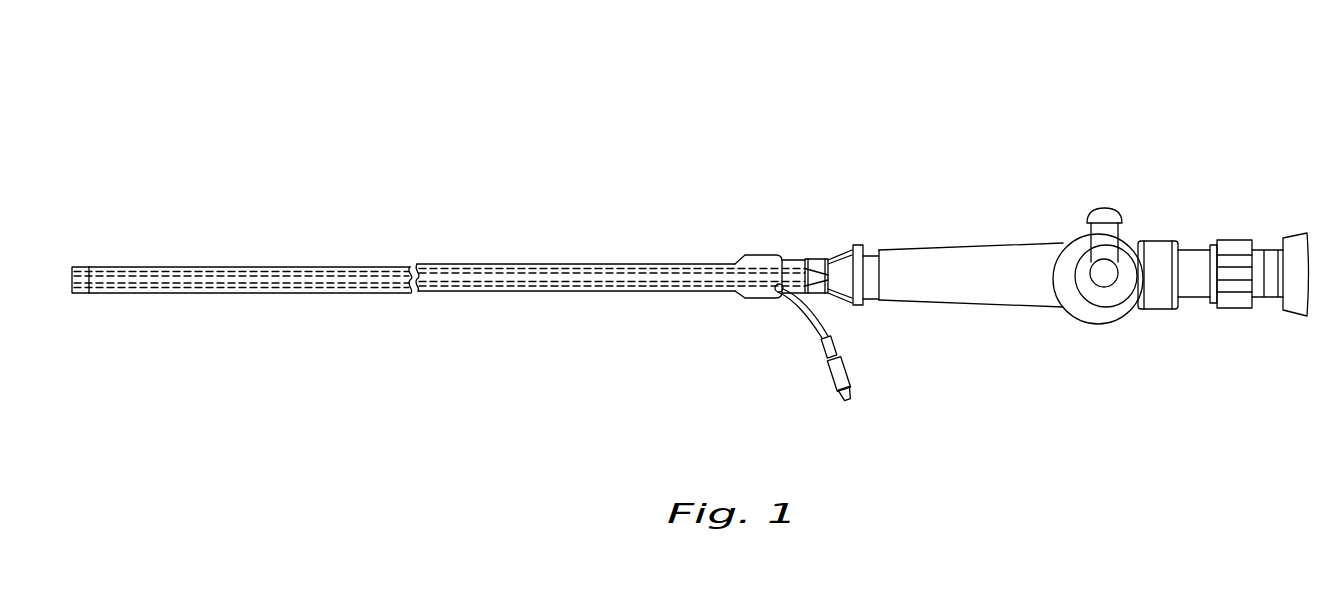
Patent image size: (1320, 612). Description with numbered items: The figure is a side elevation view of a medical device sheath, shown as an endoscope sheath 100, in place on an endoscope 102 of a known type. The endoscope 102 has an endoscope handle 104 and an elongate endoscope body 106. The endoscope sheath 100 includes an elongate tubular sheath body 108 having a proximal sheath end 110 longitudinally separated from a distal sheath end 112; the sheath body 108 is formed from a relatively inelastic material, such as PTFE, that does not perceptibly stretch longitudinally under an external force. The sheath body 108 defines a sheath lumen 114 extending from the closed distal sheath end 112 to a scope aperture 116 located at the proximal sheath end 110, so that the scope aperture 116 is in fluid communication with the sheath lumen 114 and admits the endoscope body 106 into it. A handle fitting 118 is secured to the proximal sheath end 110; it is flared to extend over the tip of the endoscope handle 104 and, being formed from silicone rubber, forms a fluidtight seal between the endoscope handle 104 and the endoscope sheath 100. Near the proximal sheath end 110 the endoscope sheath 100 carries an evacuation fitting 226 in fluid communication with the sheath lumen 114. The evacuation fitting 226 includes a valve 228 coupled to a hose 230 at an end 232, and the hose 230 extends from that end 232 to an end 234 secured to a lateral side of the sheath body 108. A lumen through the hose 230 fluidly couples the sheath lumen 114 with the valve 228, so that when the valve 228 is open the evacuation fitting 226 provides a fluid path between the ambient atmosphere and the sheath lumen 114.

The endoscope sheath 100 is at (668, 212).
The endoscope 102 is at (1060, 175).
The endoscope handle 104 is at (933, 258).
The endoscope body 106 is at (285, 285).
The sheath body 108 is at (582, 291).
The proximal sheath end 110 is at (872, 212).
The distal sheath end 112 is at (93, 248).
The sheath lumen 114 is at (557, 264).
The scope aperture 116 is at (861, 248).
The handle fitting 118 is at (861, 306).
The evacuation fitting 226 is at (898, 395).
The valve 228 is at (849, 401).
The hose 230 is at (823, 356).
The end 232 is at (856, 356).
The end 234 is at (790, 312).